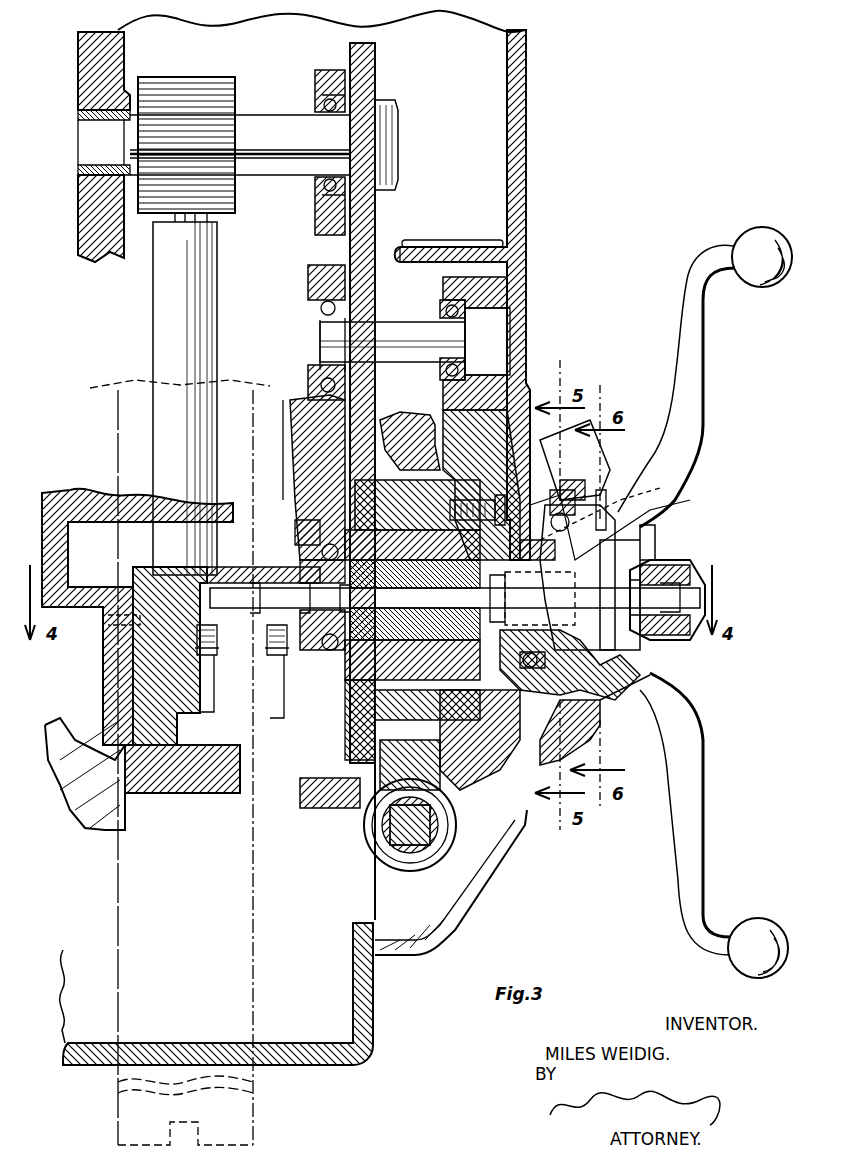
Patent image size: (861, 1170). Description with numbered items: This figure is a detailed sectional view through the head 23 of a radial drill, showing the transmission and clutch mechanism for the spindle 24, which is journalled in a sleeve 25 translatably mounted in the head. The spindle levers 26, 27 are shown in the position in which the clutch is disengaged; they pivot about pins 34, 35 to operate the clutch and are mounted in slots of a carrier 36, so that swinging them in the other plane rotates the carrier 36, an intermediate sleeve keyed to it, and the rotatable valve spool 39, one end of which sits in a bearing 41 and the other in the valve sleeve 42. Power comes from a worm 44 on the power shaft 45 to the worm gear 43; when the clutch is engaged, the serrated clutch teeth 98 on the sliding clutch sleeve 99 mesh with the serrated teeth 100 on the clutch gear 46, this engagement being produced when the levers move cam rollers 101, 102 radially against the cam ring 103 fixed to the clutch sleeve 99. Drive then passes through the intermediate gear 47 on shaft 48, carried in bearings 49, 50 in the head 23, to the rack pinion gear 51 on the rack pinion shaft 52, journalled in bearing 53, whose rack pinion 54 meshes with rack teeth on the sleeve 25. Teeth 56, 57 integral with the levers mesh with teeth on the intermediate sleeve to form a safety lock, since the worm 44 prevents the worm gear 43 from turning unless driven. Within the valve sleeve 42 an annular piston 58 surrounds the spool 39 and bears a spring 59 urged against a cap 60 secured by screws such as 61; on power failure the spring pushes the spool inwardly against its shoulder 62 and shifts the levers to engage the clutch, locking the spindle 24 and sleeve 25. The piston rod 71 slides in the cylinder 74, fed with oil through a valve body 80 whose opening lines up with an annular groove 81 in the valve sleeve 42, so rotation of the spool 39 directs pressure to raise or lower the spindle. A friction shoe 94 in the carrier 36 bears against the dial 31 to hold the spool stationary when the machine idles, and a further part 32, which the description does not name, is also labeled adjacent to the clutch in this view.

The head 23 is at (72, 492).
The spindle 24 is at (253, 995).
The sleeve 25 is at (117, 418).
The spindle lever 26 is at (752, 238).
The spindle lever 27 is at (757, 925).
The dial 31 is at (598, 735).
The cam member 32 is at (490, 780).
The pin 34 is at (570, 520).
The pin 35 is at (635, 690).
The carrier 36 is at (590, 480).
The rotatable valve spool 39 is at (455, 597).
The bearing 41 is at (501, 598).
The valve sleeve 42 is at (232, 650).
The worm gear 43 is at (350, 770).
The worm 44 is at (398, 860).
The power shaft 45 is at (425, 840).
The clutch gear 46 is at (325, 478).
The intermediate gear 47 is at (385, 262).
The shaft 48 is at (408, 360).
The bearing 49 is at (308, 288).
The bearing 50 is at (442, 303).
The rack pinion gear 51 is at (375, 66).
The rack pinion shaft 52 is at (278, 160).
The bearing 53 is at (315, 100).
The rack pinion 54 is at (195, 95).
The teeth 56 is at (655, 548).
The teeth 57 is at (618, 600).
The annular piston 58 is at (326, 655).
The spring 59 is at (404, 600).
The cap 60 is at (512, 504).
The screw 61 is at (535, 555).
The shoulder 62 is at (363, 598).
The piston rod 71 is at (205, 218).
The cylinder 74 is at (205, 355).
The valve body 80 is at (148, 568).
The annular groove 81 is at (245, 568).
The friction shoe 94 is at (600, 490).
The serrated clutch teeth 98 is at (350, 720).
The sliding clutch sleeve 99 is at (430, 470).
The serrated teeth 100 is at (320, 522).
The cam roller 101 is at (541, 598).
The cam roller 102 is at (552, 530).
The cam ring 103 is at (460, 762).